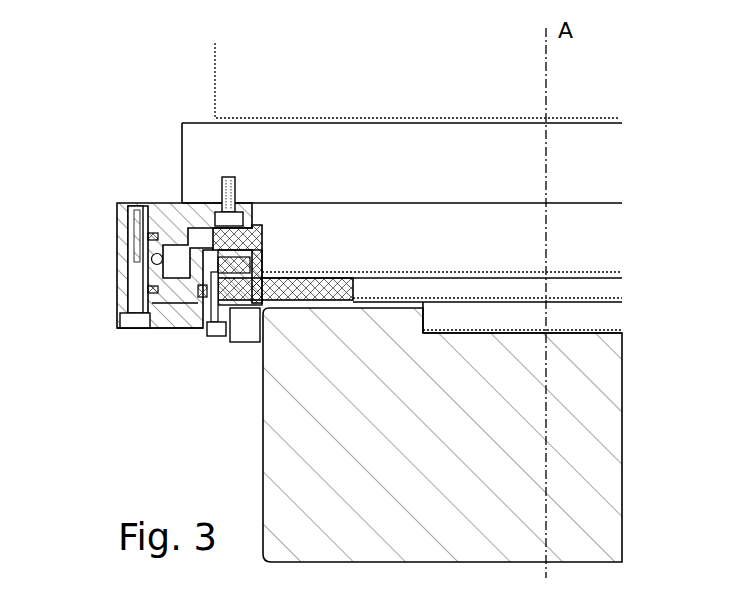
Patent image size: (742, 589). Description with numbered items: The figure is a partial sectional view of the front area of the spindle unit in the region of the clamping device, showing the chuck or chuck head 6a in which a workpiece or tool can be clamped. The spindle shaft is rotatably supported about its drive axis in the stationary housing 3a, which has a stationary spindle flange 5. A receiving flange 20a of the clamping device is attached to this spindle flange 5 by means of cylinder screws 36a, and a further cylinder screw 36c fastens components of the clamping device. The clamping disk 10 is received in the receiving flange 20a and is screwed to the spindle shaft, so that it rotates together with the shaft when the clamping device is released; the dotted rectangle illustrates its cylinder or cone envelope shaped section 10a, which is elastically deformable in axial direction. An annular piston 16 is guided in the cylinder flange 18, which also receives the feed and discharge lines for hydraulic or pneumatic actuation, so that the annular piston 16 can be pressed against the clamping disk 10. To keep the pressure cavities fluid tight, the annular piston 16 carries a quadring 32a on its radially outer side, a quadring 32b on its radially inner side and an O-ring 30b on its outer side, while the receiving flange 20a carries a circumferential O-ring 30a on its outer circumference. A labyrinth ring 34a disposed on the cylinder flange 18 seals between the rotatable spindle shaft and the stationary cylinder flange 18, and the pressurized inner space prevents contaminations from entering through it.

The housing 3a is at (588, 93).
The spindle flange 5 is at (208, 152).
The receiving flange 20a is at (167, 208).
The cylinder flange 18 is at (120, 273).
The cylinder screw 36c is at (132, 320).
The O-ring 30a is at (153, 237).
The O-ring 30b is at (155, 258).
The quadring 32a is at (155, 290).
The annular piston 16 is at (148, 318).
The quadring 32b is at (170, 295).
The cylinder screw 36a is at (232, 177).
The cylindrical section 10a is at (255, 243).
The clamping disk 10 is at (270, 290).
The labyrinth ring 34a is at (216, 328).
The chuck 6a is at (302, 486).